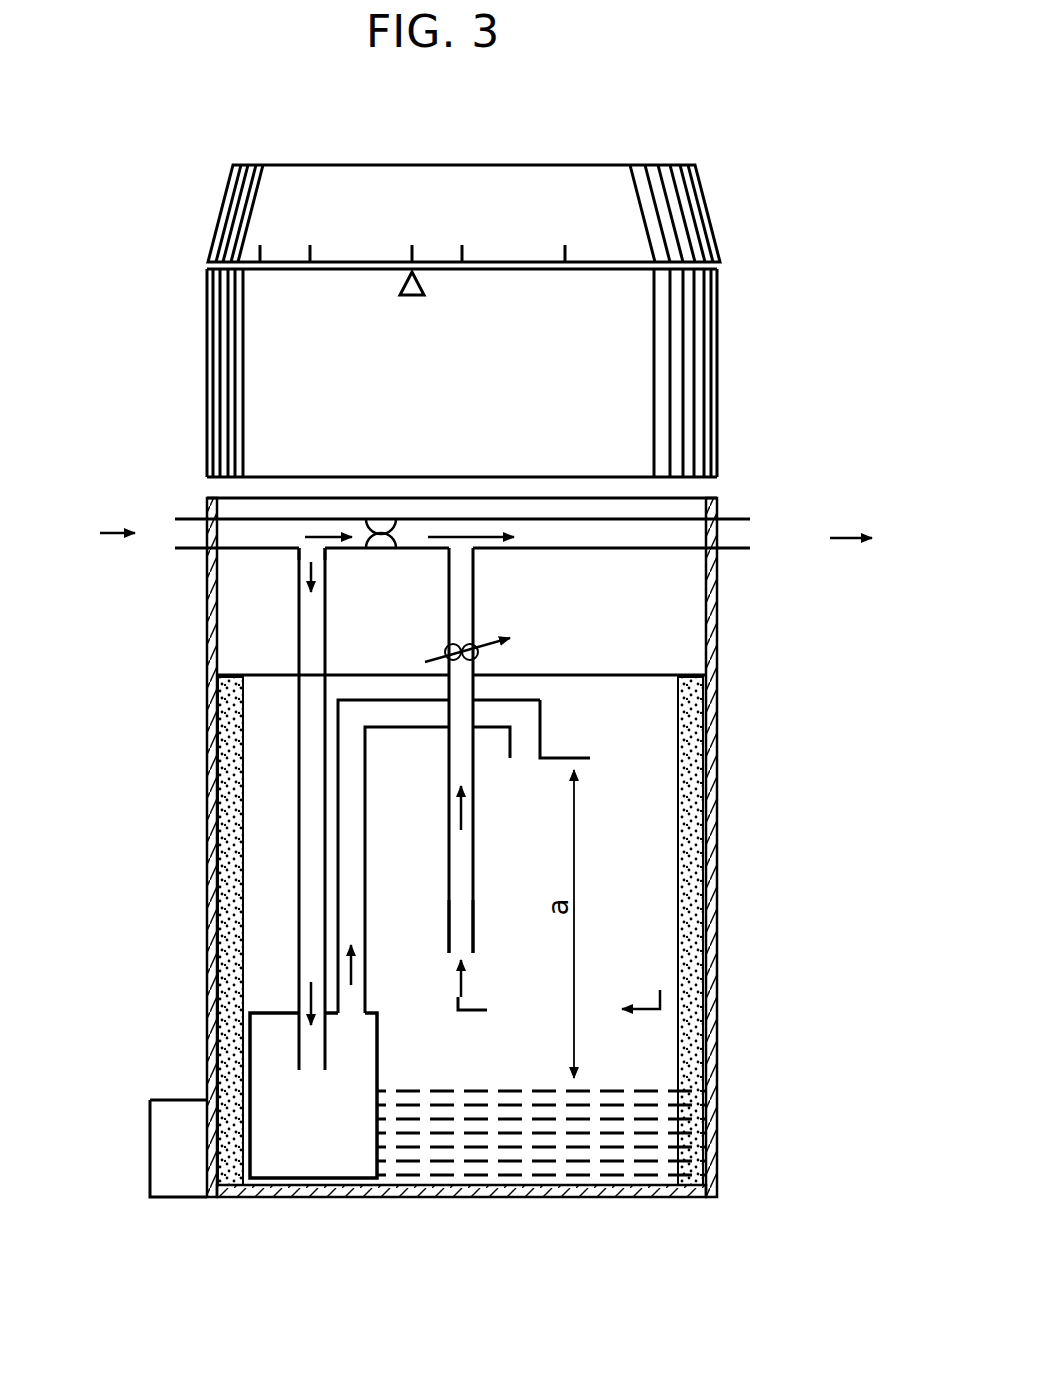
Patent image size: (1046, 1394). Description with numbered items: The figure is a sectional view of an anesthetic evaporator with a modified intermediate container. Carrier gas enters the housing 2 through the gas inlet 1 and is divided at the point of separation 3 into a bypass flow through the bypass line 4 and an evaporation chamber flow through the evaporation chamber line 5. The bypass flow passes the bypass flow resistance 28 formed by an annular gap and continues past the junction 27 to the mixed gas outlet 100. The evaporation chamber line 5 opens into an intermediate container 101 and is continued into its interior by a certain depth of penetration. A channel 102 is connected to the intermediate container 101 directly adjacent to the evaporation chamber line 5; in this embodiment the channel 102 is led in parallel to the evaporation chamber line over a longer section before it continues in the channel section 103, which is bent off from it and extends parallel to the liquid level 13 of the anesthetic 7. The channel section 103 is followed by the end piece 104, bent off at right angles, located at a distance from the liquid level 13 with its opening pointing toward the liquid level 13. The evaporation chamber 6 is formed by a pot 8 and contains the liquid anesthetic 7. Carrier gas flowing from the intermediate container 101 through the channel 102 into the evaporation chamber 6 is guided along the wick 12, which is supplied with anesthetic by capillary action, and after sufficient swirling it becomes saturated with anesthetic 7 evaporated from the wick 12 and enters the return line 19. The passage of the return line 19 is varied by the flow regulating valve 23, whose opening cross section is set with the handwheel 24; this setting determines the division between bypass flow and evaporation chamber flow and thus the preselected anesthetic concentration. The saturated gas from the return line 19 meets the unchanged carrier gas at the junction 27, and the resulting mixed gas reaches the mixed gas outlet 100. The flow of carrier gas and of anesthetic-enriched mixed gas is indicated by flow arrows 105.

The gas inlet 1 is at (215, 535).
The housing 2 is at (548, 385).
The point of separation 3 is at (303, 543).
The bypass line 4 is at (303, 518).
The evaporation chamber line 5 is at (298, 633).
The evaporation chamber 6 is at (640, 898).
The liquid anesthetic 7 is at (547, 1150).
The pot 8 is at (703, 975).
The wick 12 is at (690, 812).
The anesthetic liquid level 13 is at (648, 1090).
The return line 19 is at (448, 923).
The flow regulating valve 23 is at (483, 662).
The handwheel 24 is at (688, 228).
The junction 27 is at (463, 560).
The bypass flow resistance 28 is at (377, 518).
The mixed gas outlet 100 is at (735, 537).
The intermediate container 101 is at (247, 1130).
The channel 102 is at (345, 838).
The channel section 103 is at (372, 690).
The end piece 104 is at (545, 728).
The flow arrows 105 is at (648, 1012).